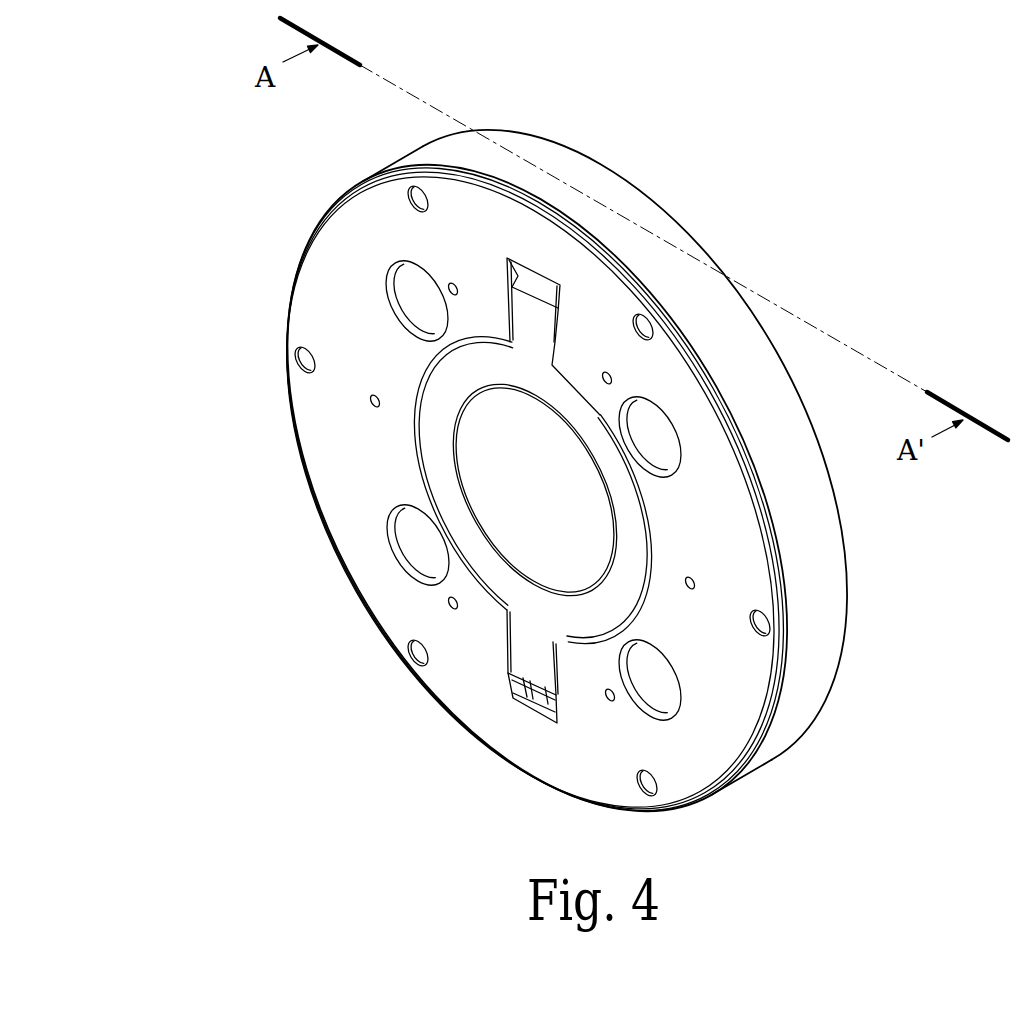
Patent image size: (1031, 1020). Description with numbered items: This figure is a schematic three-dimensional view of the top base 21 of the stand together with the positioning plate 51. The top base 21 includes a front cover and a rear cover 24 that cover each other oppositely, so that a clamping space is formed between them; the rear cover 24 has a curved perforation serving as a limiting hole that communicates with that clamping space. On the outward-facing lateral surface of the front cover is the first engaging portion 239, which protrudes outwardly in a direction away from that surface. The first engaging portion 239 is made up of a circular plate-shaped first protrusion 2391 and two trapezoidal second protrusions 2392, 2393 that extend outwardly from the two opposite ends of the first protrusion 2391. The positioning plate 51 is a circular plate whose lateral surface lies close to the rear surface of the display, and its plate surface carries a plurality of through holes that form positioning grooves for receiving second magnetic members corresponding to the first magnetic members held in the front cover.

The top base 21 is at (840, 682).
The rear cover 24 is at (830, 587).
The positioning plate 51 is at (707, 757).
The first engaging portion 239 is at (289, 778).
The first protrusion 2391 is at (455, 516).
The second protrusion 2392 is at (523, 307).
The second protrusion 2393 is at (528, 648).